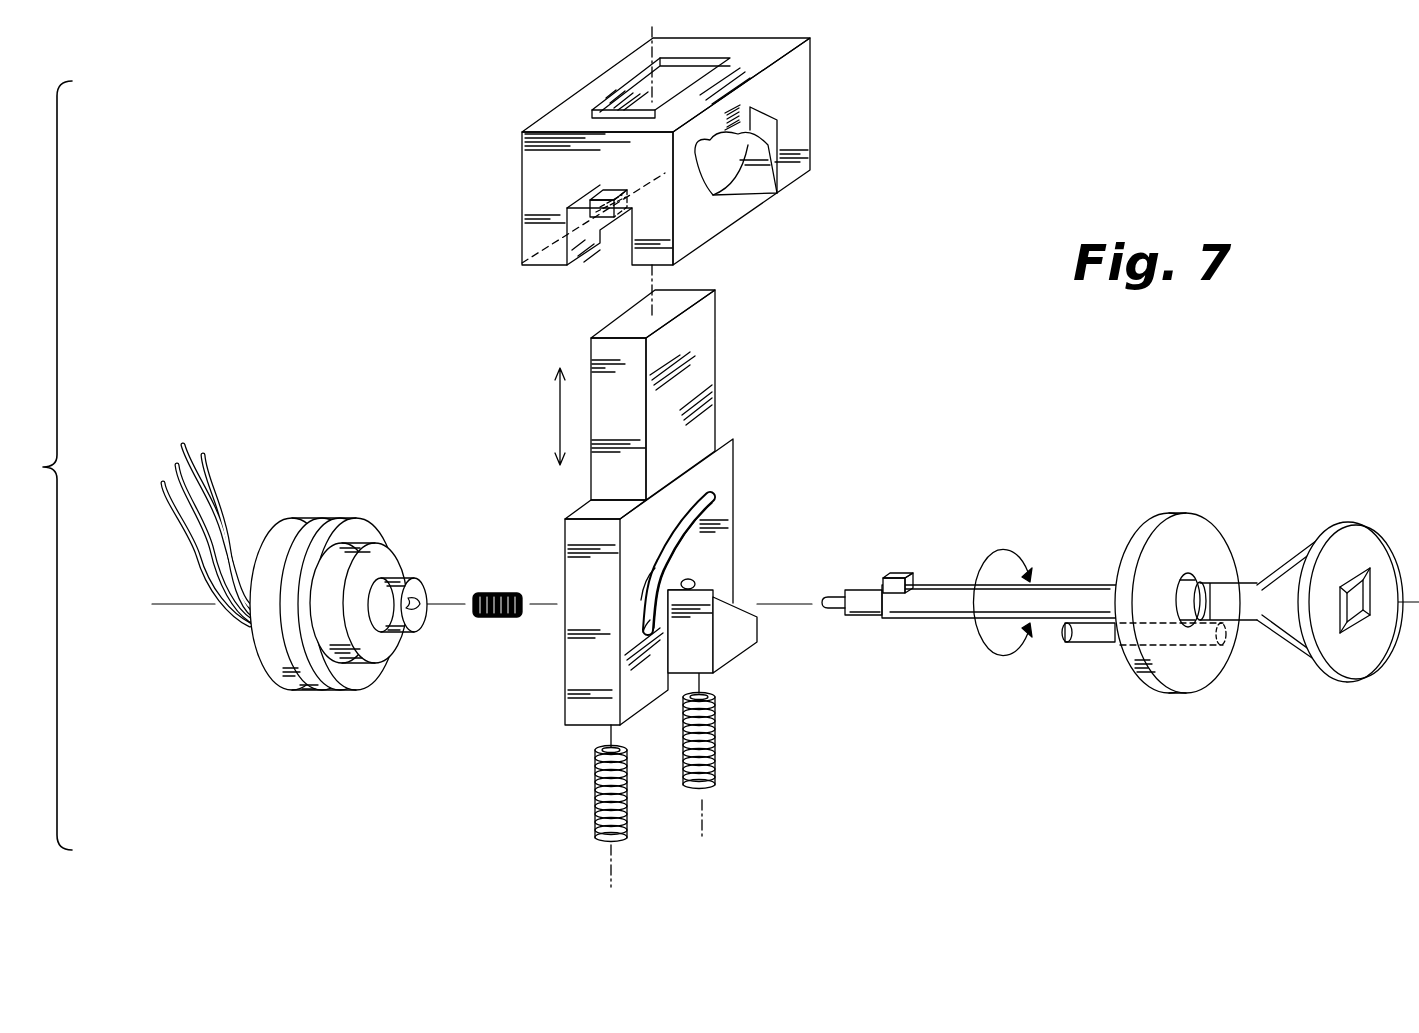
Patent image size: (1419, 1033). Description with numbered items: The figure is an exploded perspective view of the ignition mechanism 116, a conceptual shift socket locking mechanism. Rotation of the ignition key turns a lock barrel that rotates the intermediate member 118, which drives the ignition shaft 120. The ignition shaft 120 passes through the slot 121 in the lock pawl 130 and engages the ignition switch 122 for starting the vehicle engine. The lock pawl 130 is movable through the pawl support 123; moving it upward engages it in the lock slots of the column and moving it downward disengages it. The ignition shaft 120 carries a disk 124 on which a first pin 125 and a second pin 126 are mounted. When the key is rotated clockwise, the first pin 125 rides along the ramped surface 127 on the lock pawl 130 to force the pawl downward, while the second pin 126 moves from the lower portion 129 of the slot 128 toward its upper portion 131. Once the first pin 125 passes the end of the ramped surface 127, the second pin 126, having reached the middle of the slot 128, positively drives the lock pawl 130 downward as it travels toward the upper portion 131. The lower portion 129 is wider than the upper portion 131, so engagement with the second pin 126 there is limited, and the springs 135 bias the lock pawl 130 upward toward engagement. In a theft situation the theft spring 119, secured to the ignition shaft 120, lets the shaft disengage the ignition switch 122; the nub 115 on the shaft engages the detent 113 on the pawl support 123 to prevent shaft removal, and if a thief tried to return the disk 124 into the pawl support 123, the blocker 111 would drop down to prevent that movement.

The blocker 111 is at (737, 150).
The detent 113 is at (592, 198).
The nub 115 is at (903, 573).
The ignition mechanism 116 is at (312, 268).
The intermediate member 118 is at (1310, 665).
The theft spring 119 is at (507, 570).
The ignition shaft 120 is at (957, 630).
The slot 121 is at (692, 582).
The ignition switch 122 is at (345, 505).
The pawl support 123 is at (536, 84).
The disk 124 is at (1133, 545).
The first pin 125 is at (1182, 650).
The second pin 126 is at (1080, 642).
The ramped surface 127 is at (722, 597).
The slot 128 is at (630, 610).
The lower portion 129 is at (643, 632).
The lock pawl 130 is at (717, 340).
The upper portion 131 is at (733, 495).
The springs 135 is at (638, 810).